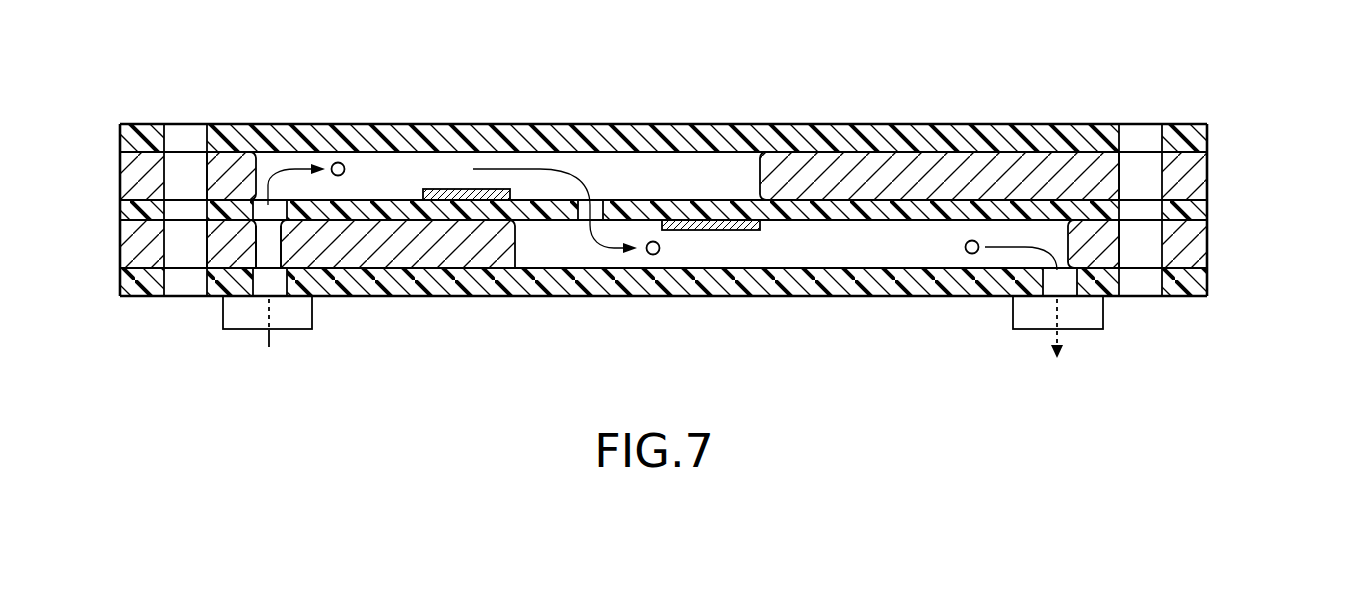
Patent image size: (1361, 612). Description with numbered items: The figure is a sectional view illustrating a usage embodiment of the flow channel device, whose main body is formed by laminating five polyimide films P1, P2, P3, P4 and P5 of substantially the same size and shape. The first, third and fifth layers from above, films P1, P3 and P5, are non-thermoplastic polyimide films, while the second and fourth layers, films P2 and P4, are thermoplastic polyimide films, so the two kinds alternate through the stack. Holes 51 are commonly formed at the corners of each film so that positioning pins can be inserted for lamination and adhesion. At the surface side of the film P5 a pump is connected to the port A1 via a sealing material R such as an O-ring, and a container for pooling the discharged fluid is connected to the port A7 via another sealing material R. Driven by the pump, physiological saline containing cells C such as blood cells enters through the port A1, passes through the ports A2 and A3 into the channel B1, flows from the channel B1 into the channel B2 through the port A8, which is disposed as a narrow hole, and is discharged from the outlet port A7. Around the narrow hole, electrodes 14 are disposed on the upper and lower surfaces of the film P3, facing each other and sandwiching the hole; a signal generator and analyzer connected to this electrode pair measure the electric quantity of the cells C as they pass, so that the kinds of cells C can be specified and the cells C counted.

The polyimide film P1 is at (1207, 139).
The polyimide film P2 is at (1207, 181).
The polyimide film P3 is at (1207, 212).
The polyimide film P4 is at (1207, 244).
The polyimide film P5 is at (1207, 281).
The hole 51 is at (185, 283).
The electrode 14 is at (440, 195).
The port A1 is at (278, 290).
The port A2 is at (263, 262).
The port A3 is at (262, 207).
The port A7 is at (1068, 290).
The port A8 is at (597, 210).
The channel B1 is at (723, 171).
The channel B2 is at (873, 255).
The cell C is at (338, 162).
The sealing material R is at (302, 312).